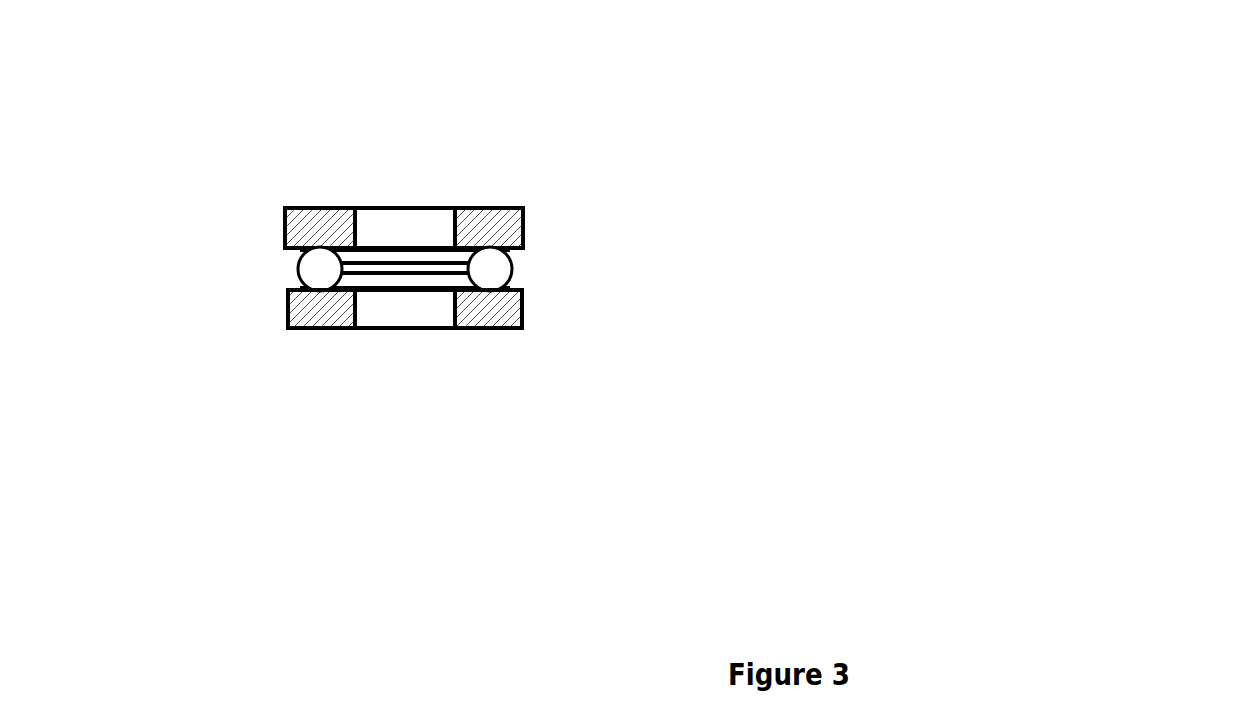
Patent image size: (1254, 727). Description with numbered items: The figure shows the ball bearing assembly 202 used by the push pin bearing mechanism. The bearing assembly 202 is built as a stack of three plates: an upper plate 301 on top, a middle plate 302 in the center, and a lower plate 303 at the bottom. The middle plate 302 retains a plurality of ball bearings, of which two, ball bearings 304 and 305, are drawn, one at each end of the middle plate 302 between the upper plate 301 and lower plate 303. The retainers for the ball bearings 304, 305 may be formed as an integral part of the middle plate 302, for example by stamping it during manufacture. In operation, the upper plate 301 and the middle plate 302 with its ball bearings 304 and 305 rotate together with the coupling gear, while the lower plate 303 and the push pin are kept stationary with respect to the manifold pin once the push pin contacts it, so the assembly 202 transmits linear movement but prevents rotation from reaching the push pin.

The bearing assembly 202 is at (1003, 48).
The upper plate 301 is at (556, 220).
The middle plate 302 is at (579, 269).
The lower plate 303 is at (554, 318).
The ball bearing 304 is at (509, 277).
The ball bearing 305 is at (302, 259).